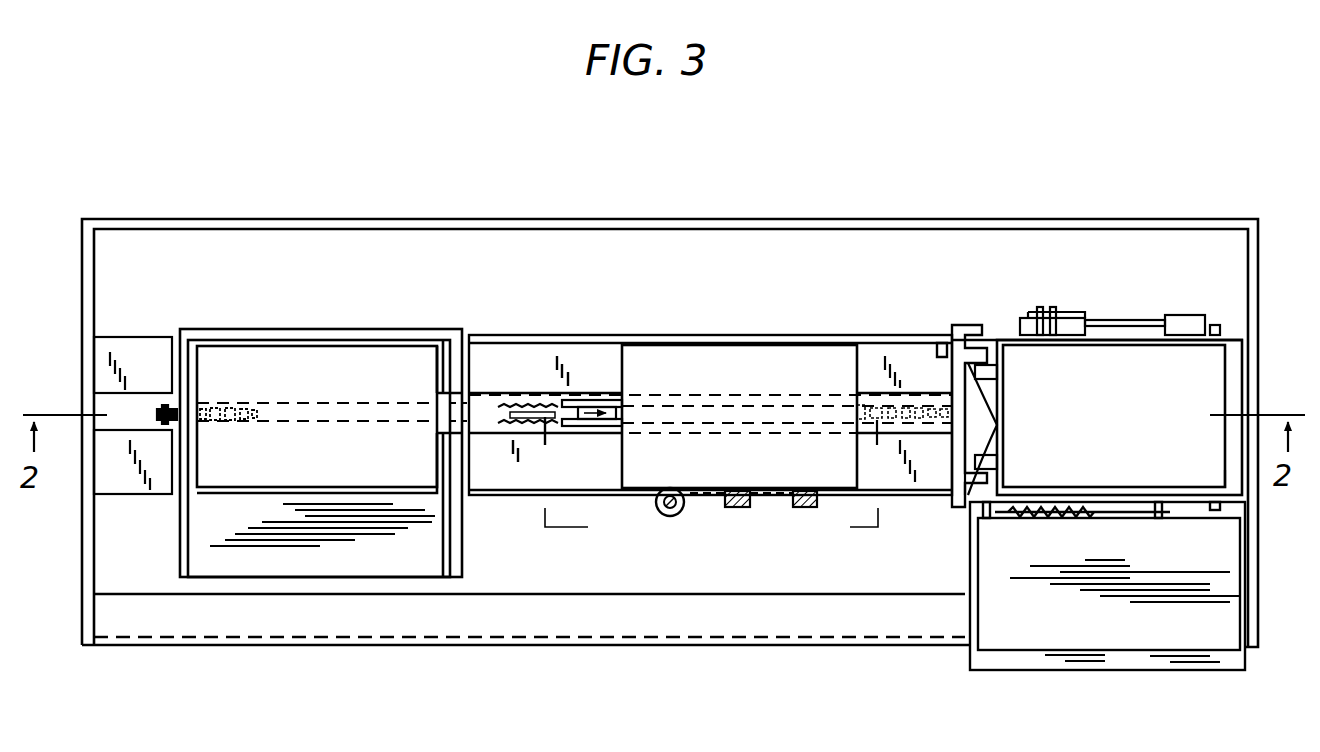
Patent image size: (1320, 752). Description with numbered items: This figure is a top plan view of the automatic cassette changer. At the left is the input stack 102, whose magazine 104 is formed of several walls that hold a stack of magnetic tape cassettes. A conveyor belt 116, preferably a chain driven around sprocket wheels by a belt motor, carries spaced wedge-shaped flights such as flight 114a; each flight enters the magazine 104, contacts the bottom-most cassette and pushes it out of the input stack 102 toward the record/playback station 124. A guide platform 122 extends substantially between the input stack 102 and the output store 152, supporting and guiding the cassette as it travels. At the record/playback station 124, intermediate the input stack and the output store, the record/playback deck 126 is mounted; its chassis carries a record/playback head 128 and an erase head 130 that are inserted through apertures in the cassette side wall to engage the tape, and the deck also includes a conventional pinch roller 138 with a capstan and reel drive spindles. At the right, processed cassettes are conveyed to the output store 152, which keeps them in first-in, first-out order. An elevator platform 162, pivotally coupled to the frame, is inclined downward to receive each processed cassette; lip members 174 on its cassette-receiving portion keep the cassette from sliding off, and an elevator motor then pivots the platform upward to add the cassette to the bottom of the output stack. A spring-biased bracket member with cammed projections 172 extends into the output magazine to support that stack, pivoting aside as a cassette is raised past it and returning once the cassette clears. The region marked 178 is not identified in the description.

The input stack 102 is at (268, 308).
The magazine 104 is at (404, 328).
The flight 114a is at (600, 400).
The conveyor belt 116 is at (528, 405).
The guide platform 122 is at (902, 352).
The record/playback station 124 is at (801, 338).
The record/playback deck 126 is at (697, 355).
The record/playback head 128 is at (737, 510).
The erase head 130 is at (806, 510).
The pinch roller 138 is at (661, 517).
The output store 152 is at (1308, 365).
The elevator platform 162 is at (1178, 470).
The projections 172 is at (997, 425).
The lip members 174 is at (992, 373).
The compartment 178 is at (1080, 618).